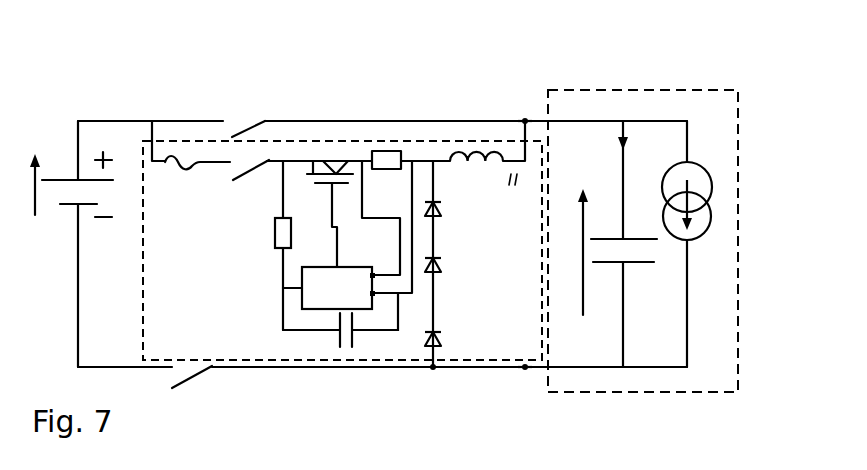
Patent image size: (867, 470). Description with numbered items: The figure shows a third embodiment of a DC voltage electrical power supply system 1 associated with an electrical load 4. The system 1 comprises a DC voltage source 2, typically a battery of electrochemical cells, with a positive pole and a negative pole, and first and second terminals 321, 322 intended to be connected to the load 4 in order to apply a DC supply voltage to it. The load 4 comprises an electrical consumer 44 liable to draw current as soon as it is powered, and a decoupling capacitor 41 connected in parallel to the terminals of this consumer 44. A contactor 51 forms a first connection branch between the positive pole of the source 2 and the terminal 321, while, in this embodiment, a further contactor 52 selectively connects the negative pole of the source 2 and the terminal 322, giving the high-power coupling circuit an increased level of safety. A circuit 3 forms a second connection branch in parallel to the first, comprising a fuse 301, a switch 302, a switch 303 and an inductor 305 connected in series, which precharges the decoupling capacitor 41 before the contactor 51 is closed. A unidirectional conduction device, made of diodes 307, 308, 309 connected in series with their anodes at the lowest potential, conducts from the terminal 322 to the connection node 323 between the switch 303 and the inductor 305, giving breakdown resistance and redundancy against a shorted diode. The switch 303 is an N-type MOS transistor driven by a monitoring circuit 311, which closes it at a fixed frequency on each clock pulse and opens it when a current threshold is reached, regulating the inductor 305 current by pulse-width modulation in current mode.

The DC voltage electrical power supply system 1 is at (94, 56).
The DC voltage source 2 is at (64, 216).
The circuit 3 is at (340, 140).
The electrical load 4 is at (644, 400).
The decoupling capacitor 41 is at (608, 216).
The electrical consumer 44 is at (703, 158).
The contactor 51 is at (240, 126).
The contactor 52 is at (196, 390).
The fuse 301 is at (175, 177).
The switch 302 is at (257, 178).
The switch 303 is at (326, 147).
The inductor 305 is at (475, 152).
The diode 307 is at (441, 209).
The diode 308 is at (441, 274).
The diode 309 is at (441, 343).
The monitoring circuit 311 is at (351, 300).
The first terminal 321 is at (525, 118).
The second terminal 322 is at (525, 370).
The connection node 323 is at (433, 160).